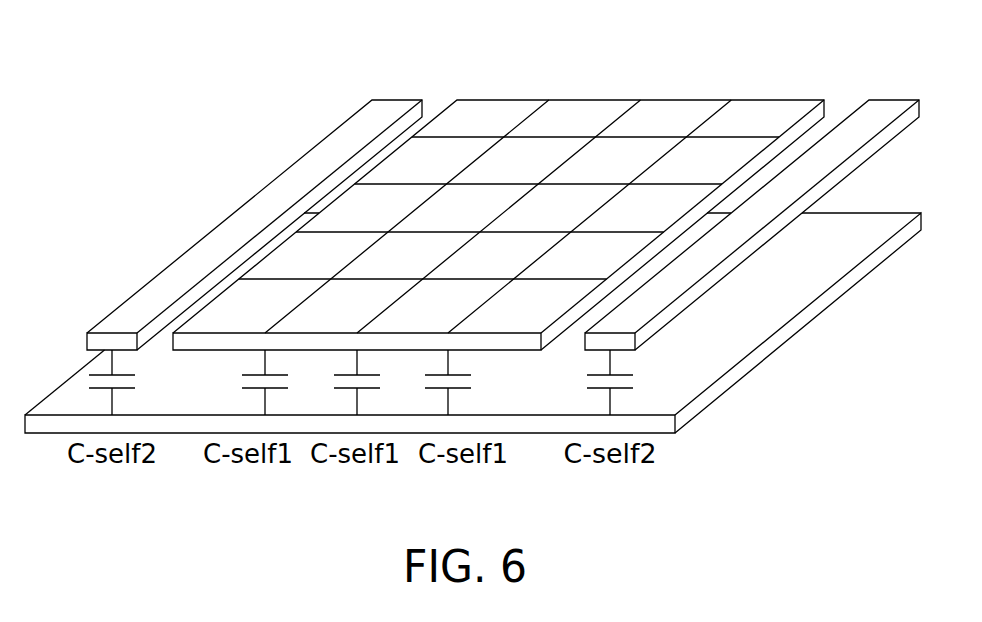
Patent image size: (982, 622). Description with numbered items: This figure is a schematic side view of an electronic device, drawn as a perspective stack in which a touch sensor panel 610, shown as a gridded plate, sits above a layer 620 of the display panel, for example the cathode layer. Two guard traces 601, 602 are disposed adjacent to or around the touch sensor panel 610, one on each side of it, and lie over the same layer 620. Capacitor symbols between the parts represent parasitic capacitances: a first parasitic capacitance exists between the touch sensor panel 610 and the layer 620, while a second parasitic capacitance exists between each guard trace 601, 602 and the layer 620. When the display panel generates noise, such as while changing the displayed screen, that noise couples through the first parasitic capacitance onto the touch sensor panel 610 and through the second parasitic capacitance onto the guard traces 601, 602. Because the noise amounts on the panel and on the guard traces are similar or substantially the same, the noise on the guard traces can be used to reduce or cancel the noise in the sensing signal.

The guard trace 601 is at (388, 108).
The guard trace 602 is at (894, 107).
The touch sensor panel 610 is at (775, 107).
The layer of the display panel 620 is at (732, 375).